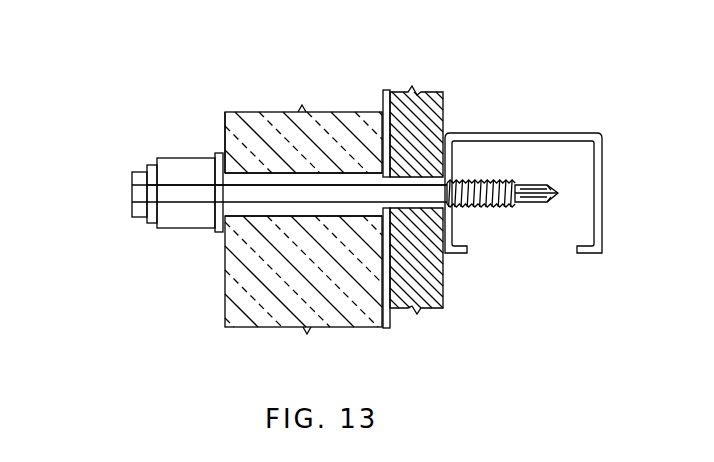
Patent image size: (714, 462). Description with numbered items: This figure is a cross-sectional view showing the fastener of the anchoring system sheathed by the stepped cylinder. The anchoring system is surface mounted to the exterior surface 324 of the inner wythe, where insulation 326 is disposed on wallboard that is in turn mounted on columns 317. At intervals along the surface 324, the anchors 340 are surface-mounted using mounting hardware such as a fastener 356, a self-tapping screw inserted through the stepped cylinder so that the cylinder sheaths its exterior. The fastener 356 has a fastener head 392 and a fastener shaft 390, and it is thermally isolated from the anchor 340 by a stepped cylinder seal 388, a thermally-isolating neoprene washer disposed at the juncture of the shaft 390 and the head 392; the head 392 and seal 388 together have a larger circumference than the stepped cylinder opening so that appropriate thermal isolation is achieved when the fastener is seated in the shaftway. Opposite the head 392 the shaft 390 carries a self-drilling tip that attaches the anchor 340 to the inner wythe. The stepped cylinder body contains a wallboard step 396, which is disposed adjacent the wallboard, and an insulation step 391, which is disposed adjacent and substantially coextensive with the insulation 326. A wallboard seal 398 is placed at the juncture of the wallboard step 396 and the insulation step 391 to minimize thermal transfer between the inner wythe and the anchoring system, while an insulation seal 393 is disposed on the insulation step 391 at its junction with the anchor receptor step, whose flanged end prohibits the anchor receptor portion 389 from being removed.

The columns 317 is at (457, 255).
The exterior surface 324 is at (225, 128).
The insulation 326 is at (252, 113).
The anchor 340 is at (280, 175).
The fastener 356 is at (132, 211).
The stepped cylinder seal 388 is at (153, 182).
The anchor receptor portion 389 is at (188, 158).
The fastener shaft 390 is at (423, 180).
The insulation step 391 is at (253, 200).
The fastener head 392 is at (132, 193).
The insulation seal 393 is at (220, 235).
The wallboard step 396 is at (411, 201).
The wallboard seal 398 is at (377, 205).